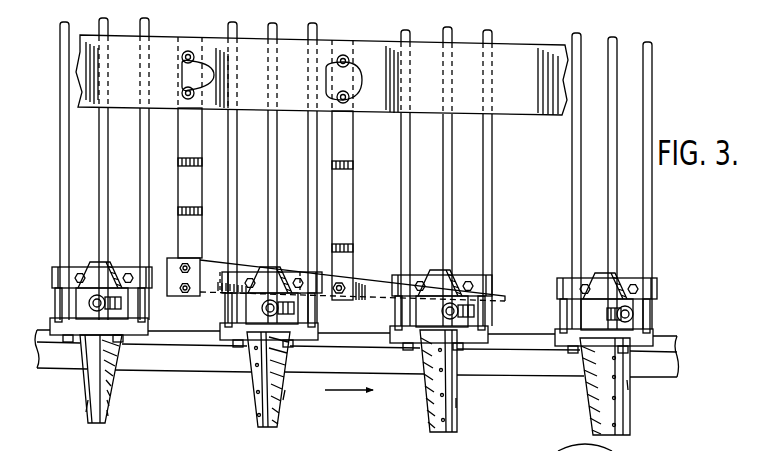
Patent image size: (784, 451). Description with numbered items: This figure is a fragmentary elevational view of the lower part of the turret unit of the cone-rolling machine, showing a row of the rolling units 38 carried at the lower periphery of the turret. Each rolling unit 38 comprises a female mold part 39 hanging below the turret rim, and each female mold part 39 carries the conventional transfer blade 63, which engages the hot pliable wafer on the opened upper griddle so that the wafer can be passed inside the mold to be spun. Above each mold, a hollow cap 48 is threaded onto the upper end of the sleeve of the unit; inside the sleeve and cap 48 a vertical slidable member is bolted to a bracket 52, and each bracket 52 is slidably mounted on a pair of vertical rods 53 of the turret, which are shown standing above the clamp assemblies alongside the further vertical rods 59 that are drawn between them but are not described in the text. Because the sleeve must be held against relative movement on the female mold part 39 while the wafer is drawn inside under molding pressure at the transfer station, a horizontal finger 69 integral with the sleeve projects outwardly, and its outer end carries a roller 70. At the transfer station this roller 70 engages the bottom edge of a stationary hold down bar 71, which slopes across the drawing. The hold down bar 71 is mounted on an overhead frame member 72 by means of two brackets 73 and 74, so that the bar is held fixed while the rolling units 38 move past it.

The rolling unit 38 is at (83, 394).
The female mold part 39 is at (110, 383).
The hollow cap 48 is at (108, 263).
The bracket 52 is at (52, 277).
The vertical rods 53 is at (60, 166).
The guide rod 59 is at (108, 191).
The transfer blade 63 is at (90, 372).
The horizontal finger 69 is at (106, 304).
The roller 70 is at (88, 304).
The hold down bar 71 is at (360, 293).
The frame member 72 is at (374, 41).
The bracket 73 is at (182, 123).
The bracket 74 is at (347, 148).